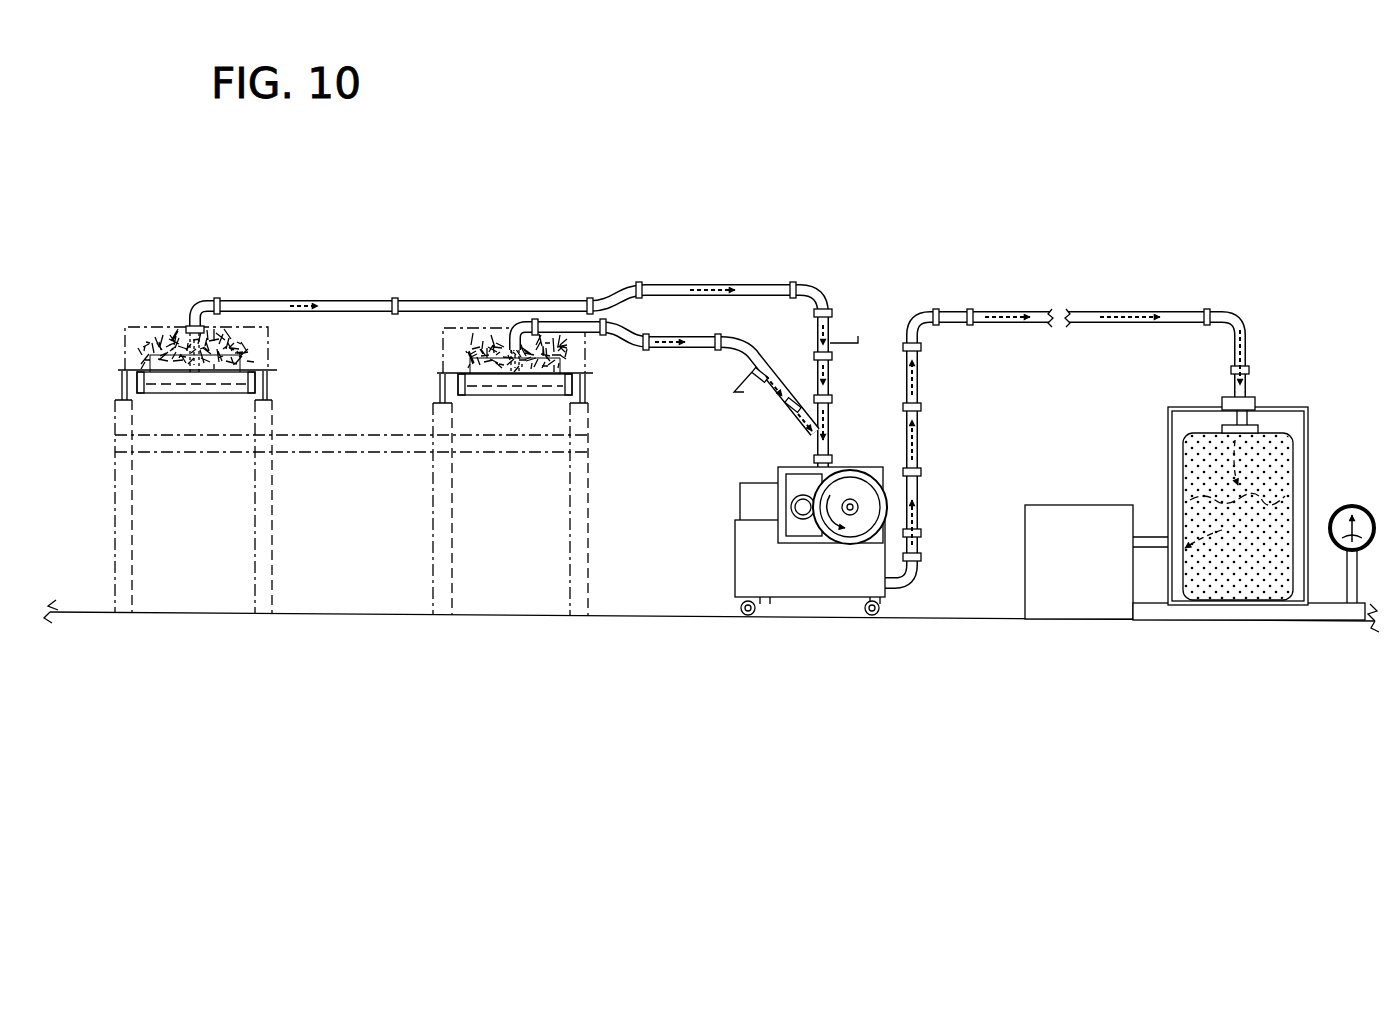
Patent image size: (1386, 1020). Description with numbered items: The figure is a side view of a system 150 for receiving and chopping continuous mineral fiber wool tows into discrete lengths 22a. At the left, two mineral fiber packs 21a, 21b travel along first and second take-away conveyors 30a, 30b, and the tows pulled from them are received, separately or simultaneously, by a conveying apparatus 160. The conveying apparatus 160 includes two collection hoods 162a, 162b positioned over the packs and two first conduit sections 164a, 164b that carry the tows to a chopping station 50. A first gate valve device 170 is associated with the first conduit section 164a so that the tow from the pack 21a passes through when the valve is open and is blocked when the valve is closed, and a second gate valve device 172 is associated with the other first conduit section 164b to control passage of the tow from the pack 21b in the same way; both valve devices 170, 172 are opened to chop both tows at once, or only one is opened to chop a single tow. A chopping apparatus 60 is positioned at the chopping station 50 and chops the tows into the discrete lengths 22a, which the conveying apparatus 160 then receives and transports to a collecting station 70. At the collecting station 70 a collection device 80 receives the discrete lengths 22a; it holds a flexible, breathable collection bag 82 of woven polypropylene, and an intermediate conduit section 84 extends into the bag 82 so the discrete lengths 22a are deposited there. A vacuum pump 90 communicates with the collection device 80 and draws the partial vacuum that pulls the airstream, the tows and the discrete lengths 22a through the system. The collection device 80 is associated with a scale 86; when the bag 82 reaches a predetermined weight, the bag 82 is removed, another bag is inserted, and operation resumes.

The mineral fiber pack 21a is at (262, 352).
The mineral fiber pack 21b is at (452, 360).
The first take-away conveyor 30a is at (200, 392).
The second take-away conveyor 30b is at (515, 394).
The chopping station 50 is at (840, 445).
The chopping apparatus 60 is at (868, 454).
The collecting station 70 is at (1268, 372).
The collection device 80 is at (1312, 441).
The collection bag 82 is at (1286, 517).
The intermediate conduit section 84 is at (1252, 414).
The scale 86 is at (1340, 617).
The vacuum pump 90 is at (1045, 510).
The discrete lengths 22a is at (1208, 576).
The system 150 is at (1066, 288).
The conveying apparatus 160 is at (748, 352).
The collection hood 162a is at (172, 347).
The collection hood 162b is at (490, 347).
The first conduit section 164a is at (333, 303).
The first conduit section 164b is at (673, 348).
The first gate valve device 170 is at (838, 326).
The second gate valve device 172 is at (752, 404).